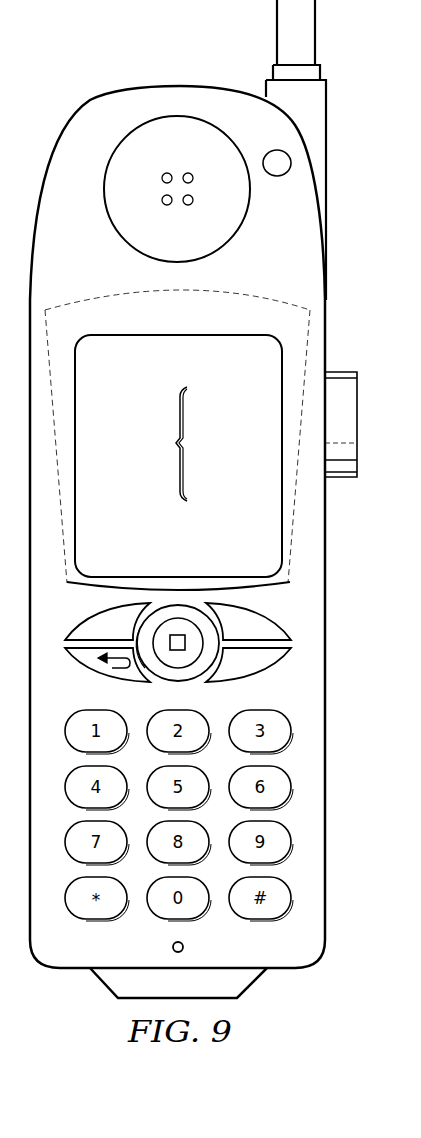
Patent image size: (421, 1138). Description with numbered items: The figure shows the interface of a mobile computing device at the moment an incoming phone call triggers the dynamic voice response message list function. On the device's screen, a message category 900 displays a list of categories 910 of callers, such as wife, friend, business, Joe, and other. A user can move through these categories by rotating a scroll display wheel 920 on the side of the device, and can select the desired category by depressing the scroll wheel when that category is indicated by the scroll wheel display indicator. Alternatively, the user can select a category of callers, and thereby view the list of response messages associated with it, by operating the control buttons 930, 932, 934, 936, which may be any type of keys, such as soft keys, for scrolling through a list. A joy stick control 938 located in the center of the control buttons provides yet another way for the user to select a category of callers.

The message category 900 is at (182, 345).
The list of categories 910 is at (157, 444).
The scroll display wheel 920 is at (342, 370).
The control button 930 is at (253, 622).
The control button 932 is at (253, 665).
The control button 934 is at (102, 665).
The control button 936 is at (102, 622).
The joy stick control 938 is at (173, 640).